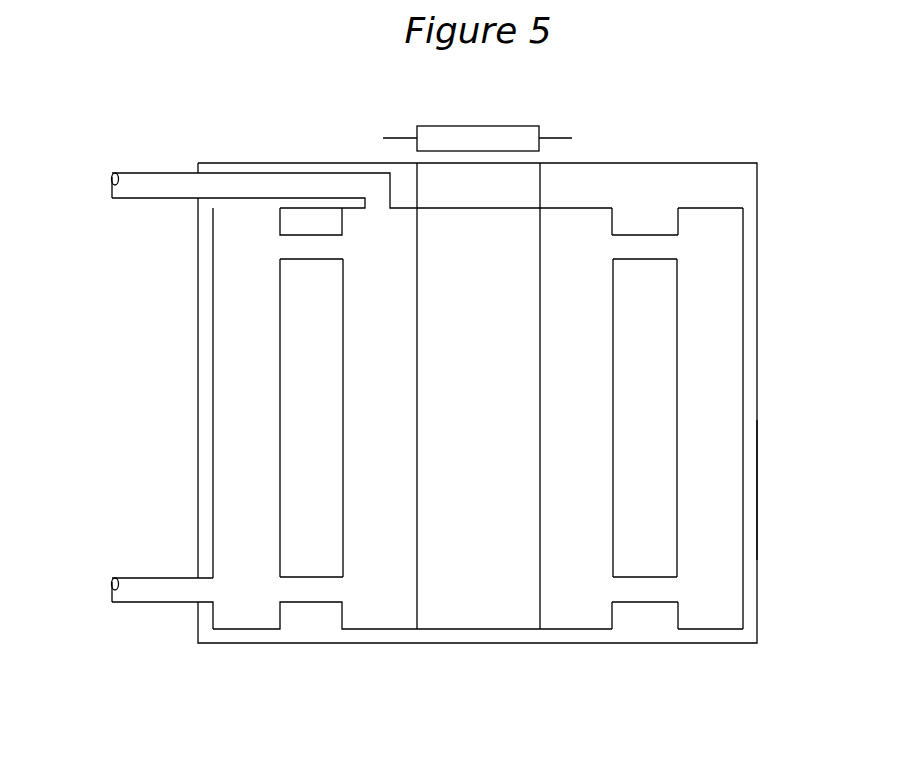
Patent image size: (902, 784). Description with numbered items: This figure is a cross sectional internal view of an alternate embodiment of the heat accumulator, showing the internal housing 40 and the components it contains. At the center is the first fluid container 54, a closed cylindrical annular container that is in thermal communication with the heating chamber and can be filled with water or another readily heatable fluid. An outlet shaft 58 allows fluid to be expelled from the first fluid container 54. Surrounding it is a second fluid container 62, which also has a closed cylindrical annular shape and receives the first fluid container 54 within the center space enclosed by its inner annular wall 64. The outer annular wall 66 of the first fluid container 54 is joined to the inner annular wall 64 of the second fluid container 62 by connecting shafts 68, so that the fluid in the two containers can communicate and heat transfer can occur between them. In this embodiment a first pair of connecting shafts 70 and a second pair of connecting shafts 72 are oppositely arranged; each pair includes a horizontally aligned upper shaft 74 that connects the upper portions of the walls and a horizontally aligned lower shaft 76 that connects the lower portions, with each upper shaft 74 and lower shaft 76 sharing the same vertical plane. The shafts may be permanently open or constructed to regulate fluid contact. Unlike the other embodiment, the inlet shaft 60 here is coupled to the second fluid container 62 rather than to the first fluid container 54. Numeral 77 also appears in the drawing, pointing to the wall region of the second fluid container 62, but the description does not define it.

The housing 40 is at (760, 235).
The first fluid container 54 is at (378, 612).
The outlet shaft 58 is at (321, 183).
The inlet shaft 60 is at (168, 589).
The second fluid container 62 is at (247, 297).
The inner annular wall 64 is at (278, 378).
The outer annular wall 66 is at (344, 418).
The connecting shafts 68 is at (633, 607).
The first pair of connecting shafts 70 is at (645, 604).
The second pair of connecting shafts 72 is at (311, 235).
The upper shaft 74 is at (290, 245).
The lower shaft 76 is at (312, 577).
The wall 77 is at (750, 532).